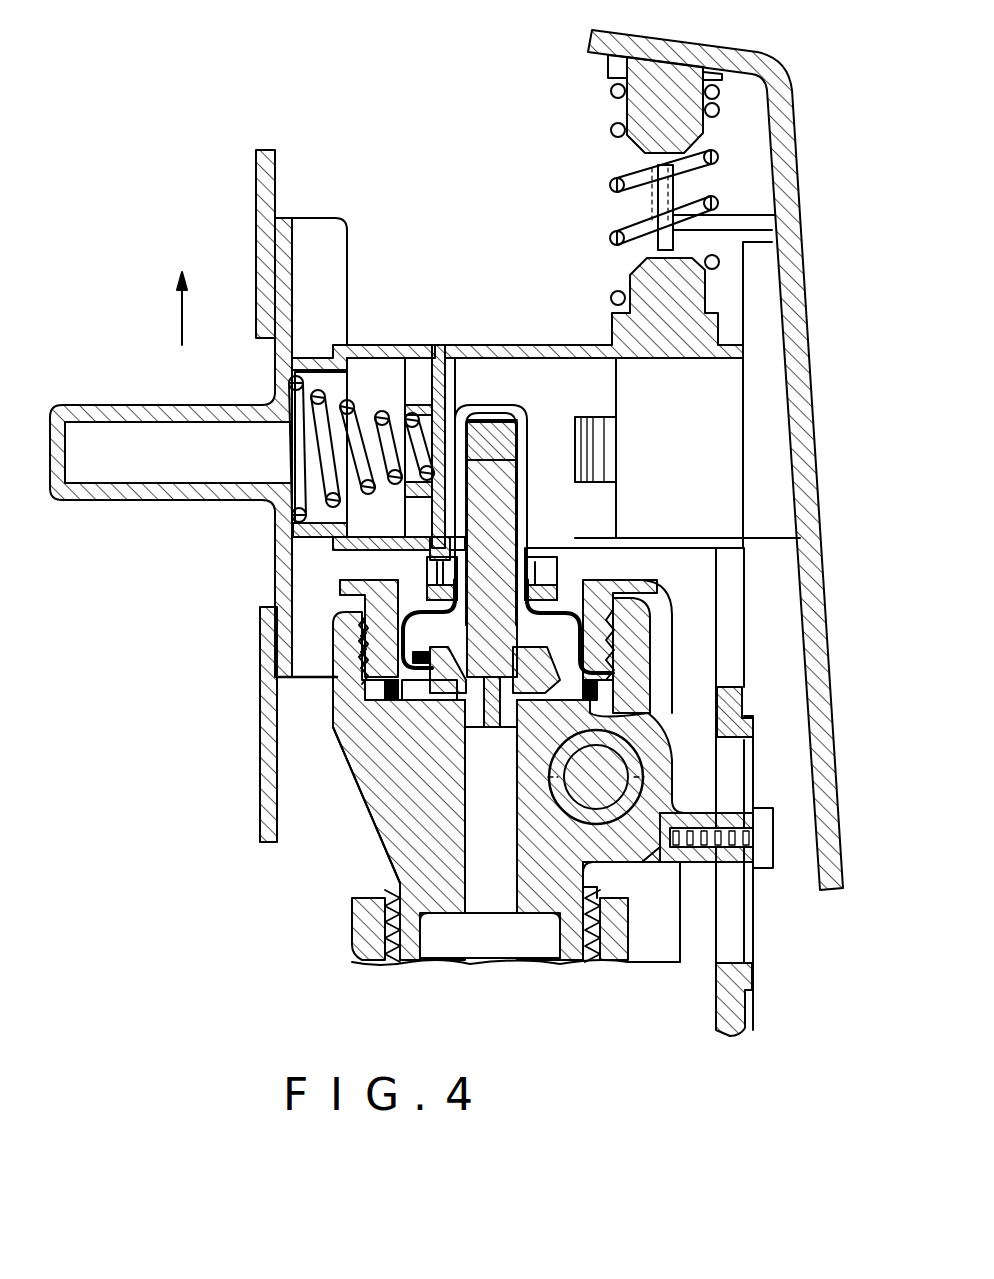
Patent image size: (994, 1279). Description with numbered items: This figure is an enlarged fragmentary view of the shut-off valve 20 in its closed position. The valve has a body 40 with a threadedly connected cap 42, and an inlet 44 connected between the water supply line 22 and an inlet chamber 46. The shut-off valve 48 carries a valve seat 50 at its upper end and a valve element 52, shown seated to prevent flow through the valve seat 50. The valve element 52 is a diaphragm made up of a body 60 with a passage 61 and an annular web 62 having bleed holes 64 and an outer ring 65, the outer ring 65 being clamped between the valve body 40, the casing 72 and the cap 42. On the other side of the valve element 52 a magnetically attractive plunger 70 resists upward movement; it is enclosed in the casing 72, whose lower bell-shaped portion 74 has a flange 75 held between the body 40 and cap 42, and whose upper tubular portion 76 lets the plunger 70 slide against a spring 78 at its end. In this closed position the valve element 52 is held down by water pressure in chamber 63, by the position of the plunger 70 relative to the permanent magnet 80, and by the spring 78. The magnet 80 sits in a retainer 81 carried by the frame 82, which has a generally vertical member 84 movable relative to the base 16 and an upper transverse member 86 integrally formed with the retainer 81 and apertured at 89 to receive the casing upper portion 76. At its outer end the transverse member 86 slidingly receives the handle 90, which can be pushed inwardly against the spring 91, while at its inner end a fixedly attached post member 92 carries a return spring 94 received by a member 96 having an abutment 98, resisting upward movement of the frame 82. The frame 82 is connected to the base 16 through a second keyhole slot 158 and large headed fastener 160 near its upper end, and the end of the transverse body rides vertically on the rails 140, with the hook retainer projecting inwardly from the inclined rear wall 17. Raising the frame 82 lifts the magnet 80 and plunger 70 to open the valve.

The base 16 is at (800, 262).
The rear wall 17 is at (792, 433).
The shut-off valve 20 is at (327, 630).
The water supply line 22 is at (604, 804).
The body 40 is at (340, 660).
The cap 42 is at (620, 580).
The inlet 44 is at (647, 760).
The inlet chamber 46 is at (657, 713).
The shut-off valve 48 is at (480, 820).
The valve seat 50 is at (480, 680).
The valve element 52 is at (560, 565).
The body 60 is at (420, 700).
The passage 61 is at (492, 727).
The annular web 62 is at (380, 600).
The chamber 63 is at (640, 602).
The bleed holes 64 is at (355, 640).
The outer ring 65 is at (405, 690).
The plunger 70 is at (500, 500).
The casing 72 is at (528, 412).
The lower bell-shaped portion 74 is at (435, 575).
The flange 75 is at (380, 690).
The upper tubular portion 76 is at (455, 357).
The spring 78 is at (495, 420).
The permanent magnet 80 is at (440, 570).
The retainer 81 is at (592, 538).
The frame 82 is at (418, 298).
The vertical member 84 is at (745, 695).
The upper transverse member 86 is at (480, 345).
The aperture 89 is at (527, 470).
The handle 90 is at (170, 380).
The spring 91 is at (383, 370).
The post member 92 is at (640, 270).
The return spring 94 is at (612, 180).
The member 96 is at (625, 112).
The abutment 98 is at (612, 76).
The rails 140 is at (767, 345).
The second keyhole slot 158 is at (760, 760).
The large headed fastener 160 is at (773, 838).